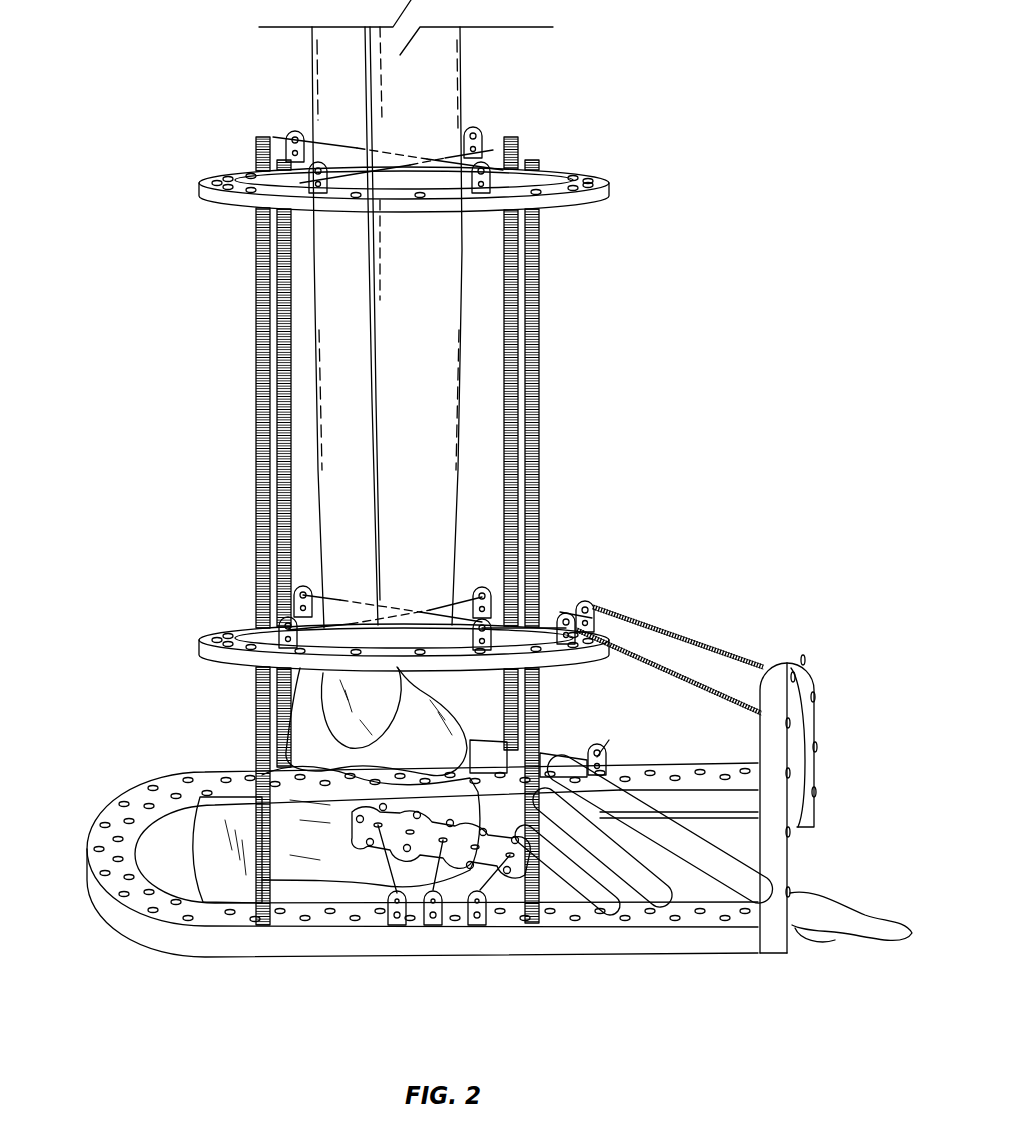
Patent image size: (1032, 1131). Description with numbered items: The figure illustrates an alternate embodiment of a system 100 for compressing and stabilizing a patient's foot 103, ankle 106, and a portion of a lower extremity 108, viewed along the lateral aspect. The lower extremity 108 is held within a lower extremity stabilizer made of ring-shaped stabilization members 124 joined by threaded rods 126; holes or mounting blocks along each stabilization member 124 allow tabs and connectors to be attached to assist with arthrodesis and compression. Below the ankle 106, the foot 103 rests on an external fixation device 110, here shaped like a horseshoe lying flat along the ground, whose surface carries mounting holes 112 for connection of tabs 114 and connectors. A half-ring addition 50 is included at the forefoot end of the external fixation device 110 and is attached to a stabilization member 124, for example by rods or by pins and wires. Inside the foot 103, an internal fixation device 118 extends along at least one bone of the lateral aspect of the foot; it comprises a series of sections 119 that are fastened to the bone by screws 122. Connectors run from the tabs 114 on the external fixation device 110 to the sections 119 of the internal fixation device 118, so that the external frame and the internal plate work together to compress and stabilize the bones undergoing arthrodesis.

The system 100 is at (637, 343).
The lower extremity 108 is at (282, 100).
The stabilization member 124 is at (612, 190).
The rod 126 is at (540, 442).
The half-ring addition 50 is at (805, 650).
The foot 103 is at (567, 746).
The mounting hole 112 is at (648, 776).
The ankle 106 is at (298, 740).
The external fixation device 110 is at (102, 834).
The internal fixation device 118 is at (352, 826).
The screw 122 is at (363, 851).
The section 119 is at (385, 797).
The tab 114 is at (477, 930).